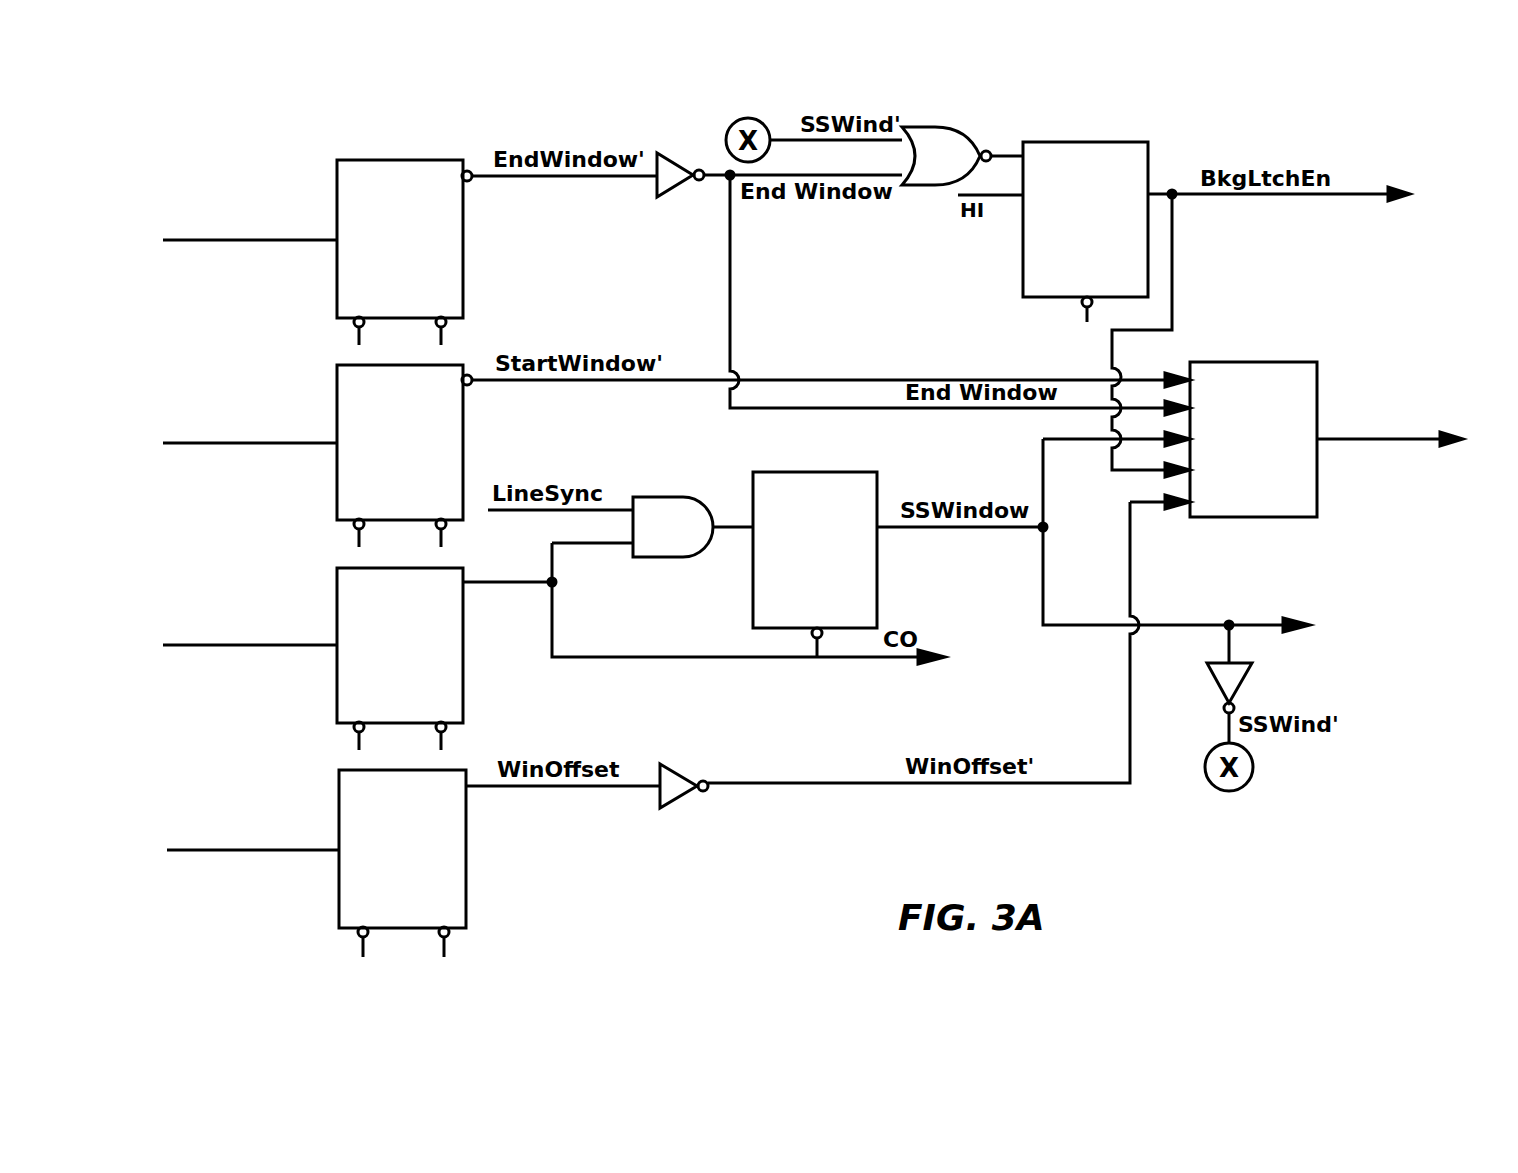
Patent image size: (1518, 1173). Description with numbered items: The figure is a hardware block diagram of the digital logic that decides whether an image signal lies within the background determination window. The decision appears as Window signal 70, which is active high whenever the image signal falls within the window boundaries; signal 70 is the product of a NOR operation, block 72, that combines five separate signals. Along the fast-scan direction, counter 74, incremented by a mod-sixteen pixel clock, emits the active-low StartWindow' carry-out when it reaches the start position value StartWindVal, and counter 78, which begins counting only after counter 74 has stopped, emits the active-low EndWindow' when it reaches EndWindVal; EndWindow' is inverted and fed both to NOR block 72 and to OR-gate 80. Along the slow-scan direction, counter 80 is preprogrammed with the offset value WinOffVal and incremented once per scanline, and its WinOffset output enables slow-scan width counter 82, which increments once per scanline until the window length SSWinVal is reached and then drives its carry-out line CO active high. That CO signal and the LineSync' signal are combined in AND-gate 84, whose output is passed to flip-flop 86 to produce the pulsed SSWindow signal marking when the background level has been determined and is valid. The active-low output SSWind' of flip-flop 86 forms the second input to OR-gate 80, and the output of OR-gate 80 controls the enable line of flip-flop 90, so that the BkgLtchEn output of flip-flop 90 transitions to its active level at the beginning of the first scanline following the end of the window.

The Window signal 70 is at (1345, 441).
The NOR block 72 is at (1265, 362).
The counter 74 is at (337, 475).
The counter 78 is at (337, 268).
The counter 80 is at (339, 885).
The slow-scan width counter 82 is at (337, 672).
The AND-gate 84 is at (660, 497).
The flip-flop 86 is at (793, 472).
The flip-flop 90 is at (1097, 142).